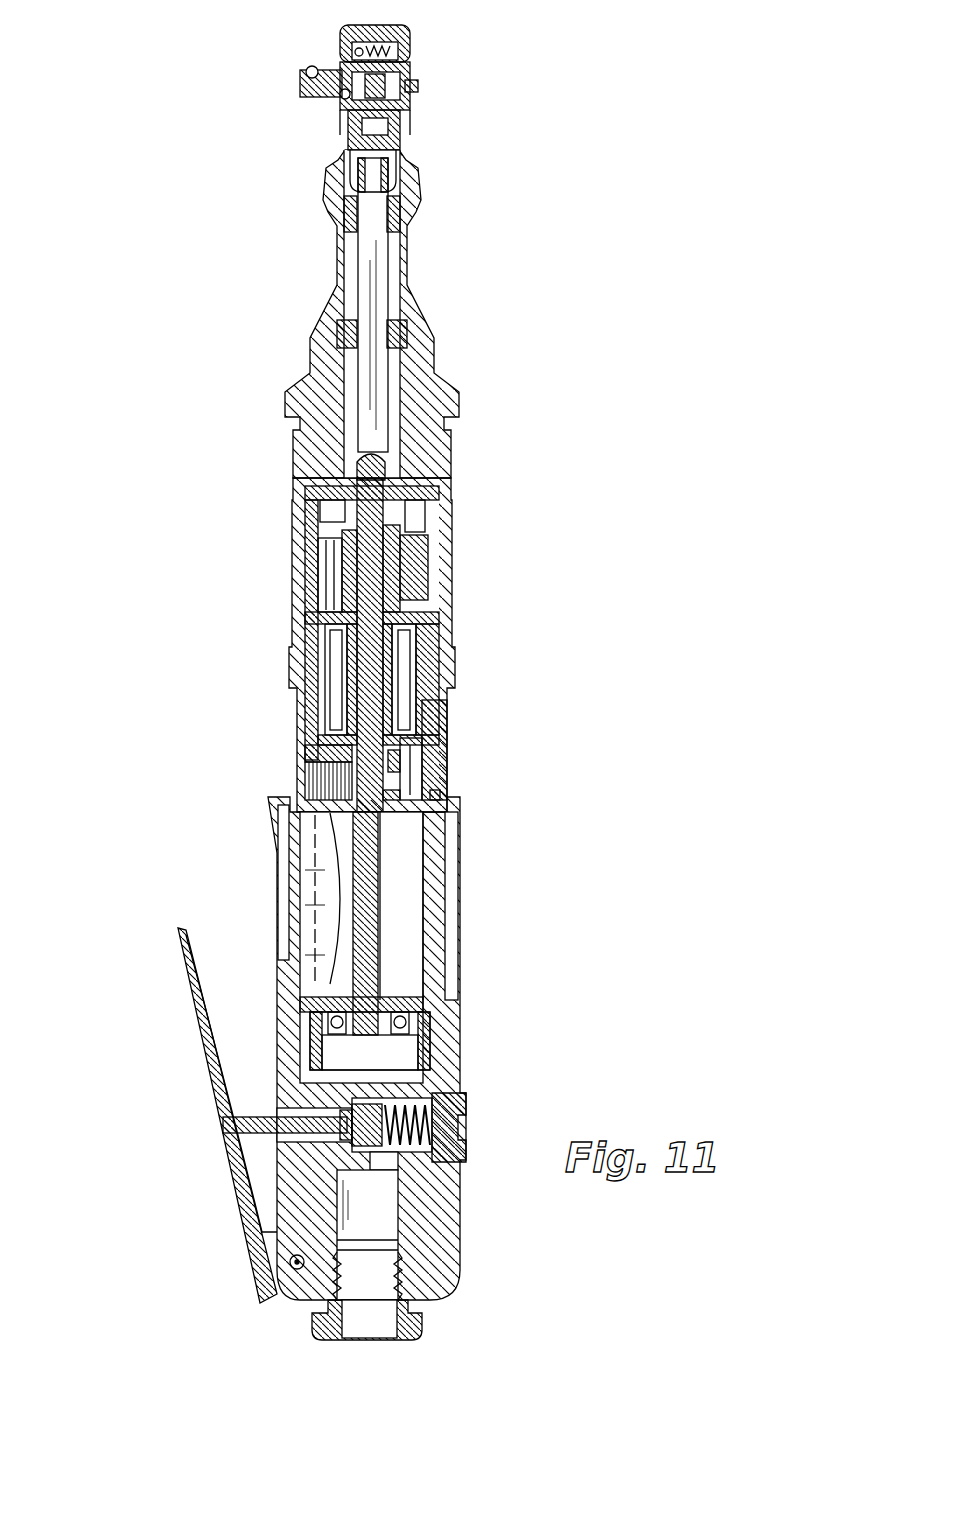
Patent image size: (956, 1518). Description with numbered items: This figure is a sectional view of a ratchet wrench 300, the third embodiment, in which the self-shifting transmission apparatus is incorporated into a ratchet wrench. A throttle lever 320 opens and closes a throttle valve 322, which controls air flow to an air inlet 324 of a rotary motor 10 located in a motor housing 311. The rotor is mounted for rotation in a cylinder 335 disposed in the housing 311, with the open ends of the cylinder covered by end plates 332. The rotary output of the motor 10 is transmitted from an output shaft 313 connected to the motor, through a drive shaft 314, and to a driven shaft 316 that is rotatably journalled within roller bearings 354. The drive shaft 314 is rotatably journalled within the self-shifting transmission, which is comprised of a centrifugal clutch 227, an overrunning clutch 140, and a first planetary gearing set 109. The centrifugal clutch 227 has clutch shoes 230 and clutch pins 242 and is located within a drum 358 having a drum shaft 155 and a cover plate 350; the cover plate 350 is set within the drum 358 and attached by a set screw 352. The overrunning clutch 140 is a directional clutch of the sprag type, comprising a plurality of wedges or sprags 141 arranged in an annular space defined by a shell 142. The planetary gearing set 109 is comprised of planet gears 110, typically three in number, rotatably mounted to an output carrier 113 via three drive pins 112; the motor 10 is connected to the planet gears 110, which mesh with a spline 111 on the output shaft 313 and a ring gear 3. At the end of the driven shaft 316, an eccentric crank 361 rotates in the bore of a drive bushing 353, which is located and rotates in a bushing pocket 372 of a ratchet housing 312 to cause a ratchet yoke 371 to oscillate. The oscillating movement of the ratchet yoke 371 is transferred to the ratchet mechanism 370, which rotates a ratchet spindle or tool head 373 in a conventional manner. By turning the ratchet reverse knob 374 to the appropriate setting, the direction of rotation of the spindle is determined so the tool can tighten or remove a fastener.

The ring gear 3 is at (312, 784).
The rotary motor 10 is at (436, 958).
The first planetary gearing set 109 is at (486, 786).
The planet gears 110 is at (428, 780).
The spline 111 is at (395, 764).
The drive pins 112 is at (434, 794).
The output carrier 113 is at (420, 724).
The overrunning clutch 140 is at (472, 664).
The sprags 141 is at (335, 673).
The shell 142 is at (320, 638).
The drum shaft 155 is at (416, 647).
The centrifugal clutch 227 is at (538, 556).
The clutch shoes 230 is at (412, 588).
The clutch pins 242 is at (332, 565).
The ratchet wrench 300 is at (536, 354).
The motor housing 311 is at (446, 1064).
The ratchet housing 312 is at (410, 188).
The output shaft 313 is at (412, 832).
The drive shaft 314 is at (372, 565).
The driven shaft 316 is at (376, 285).
The throttle lever 320 is at (180, 990).
The throttle valve 322 is at (258, 1120).
The air inlet 324 is at (370, 1325).
The end plates 332 is at (440, 816).
The cylinder 335 is at (318, 878).
The cover plate 350 is at (432, 520).
The set screw 352 is at (300, 472).
The drive bushing 353 is at (358, 178).
The roller bearings 354 is at (338, 218).
The drum 358 is at (305, 552).
The eccentric crank 361 is at (386, 173).
The ratchet mechanism 370 is at (400, 76).
The ratchet yoke 371 is at (400, 130).
The bushing pocket 372 is at (352, 154).
The ratchet spindle 373 is at (300, 80).
The ratchet reverse knob 374 is at (416, 86).